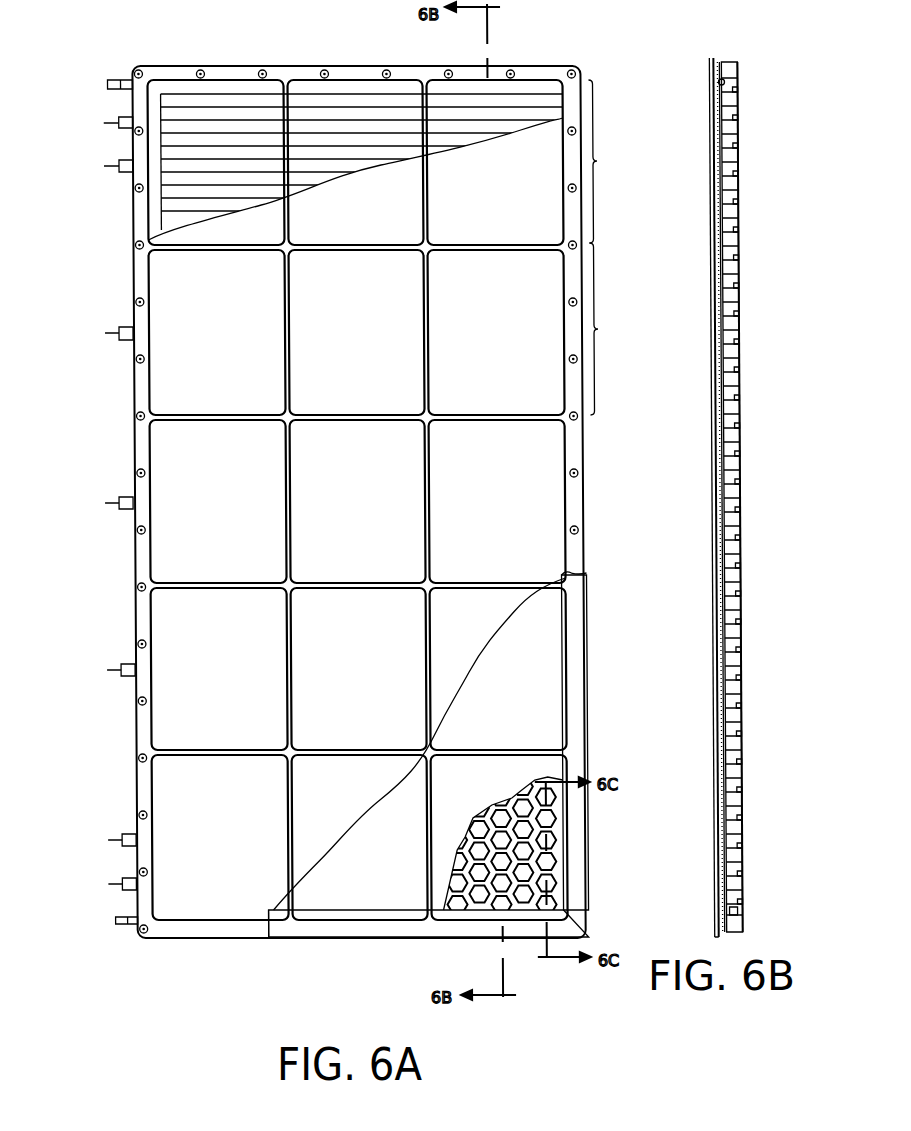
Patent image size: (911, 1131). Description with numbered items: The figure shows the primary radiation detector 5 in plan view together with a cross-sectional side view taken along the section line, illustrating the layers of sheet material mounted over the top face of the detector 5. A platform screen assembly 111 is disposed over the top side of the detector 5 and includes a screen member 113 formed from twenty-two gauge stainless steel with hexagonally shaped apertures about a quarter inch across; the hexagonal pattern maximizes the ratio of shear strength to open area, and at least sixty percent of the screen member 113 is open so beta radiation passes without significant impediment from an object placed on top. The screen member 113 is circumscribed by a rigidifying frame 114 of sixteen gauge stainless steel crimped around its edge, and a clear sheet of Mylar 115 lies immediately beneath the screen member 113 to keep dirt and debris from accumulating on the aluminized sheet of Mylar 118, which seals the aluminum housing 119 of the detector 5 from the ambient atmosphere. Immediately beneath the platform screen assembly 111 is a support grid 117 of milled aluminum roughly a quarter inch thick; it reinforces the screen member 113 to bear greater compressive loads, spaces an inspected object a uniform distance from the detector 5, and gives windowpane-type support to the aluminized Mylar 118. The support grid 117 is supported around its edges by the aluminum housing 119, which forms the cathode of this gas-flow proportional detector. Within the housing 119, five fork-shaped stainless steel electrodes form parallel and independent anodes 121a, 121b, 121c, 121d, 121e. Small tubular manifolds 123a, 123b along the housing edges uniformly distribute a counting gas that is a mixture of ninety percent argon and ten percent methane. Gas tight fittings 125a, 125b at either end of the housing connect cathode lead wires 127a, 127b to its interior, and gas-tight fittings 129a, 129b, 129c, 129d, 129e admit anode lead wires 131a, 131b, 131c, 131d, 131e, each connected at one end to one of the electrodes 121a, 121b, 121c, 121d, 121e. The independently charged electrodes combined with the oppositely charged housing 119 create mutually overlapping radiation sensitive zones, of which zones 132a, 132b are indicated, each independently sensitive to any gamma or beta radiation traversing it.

In FIG. 6A, the primary detector 5 is at (117, 44).
In FIG. 6A, the platform screen assembly 111 is at (265, 955).
In FIG. 6B, the platform screen assembly 111 is at (709, 793).
In FIG. 6A, the screen member 113 is at (468, 905).
In FIG. 6A, the rigidifying frame 114 is at (594, 738).
In FIG. 6A, the clear sheet of Mylar 115 is at (355, 890).
In FIG. 6A, the support grid 117 is at (429, 425).
In FIG. 6B, the support grid 117 is at (717, 715).
In FIG. 6A, the aluminized sheet of Mylar 118 is at (210, 360).
In FIG. 6A, the aluminum housing 119 is at (230, 68).
In FIG. 6B, the aluminum housing 119 is at (720, 65).
In FIG. 6A, the fork-shaped electrode 121a is at (387, 106).
In FIG. 6B, the fork-shaped electrode 121a is at (781, 169).
In FIG. 6B, the fork-shaped electrode 121b is at (781, 338).
In FIG. 6B, the fork-shaped electrode 121c is at (780, 528).
In FIG. 6B, the fork-shaped electrode 121d is at (779, 682).
In FIG. 6B, the fork-shaped electrode 121e is at (740, 793).
In FIG. 6A, the tubular manifold 123a is at (108, 78).
In FIG. 6B, the tubular manifold 123a is at (718, 82).
In FIG. 6A, the tubular manifold 123b is at (117, 925).
In FIG. 6B, the tubular manifold 123b is at (732, 912).
In FIG. 6A, the gas tight fitting 125a is at (118, 117).
In FIG. 6A, the gas tight fitting 125b is at (117, 890).
In FIG. 6A, the cathode lead wire 127a is at (118, 124).
In FIG. 6A, the cathode lead wire 127b is at (117, 882).
In FIG. 6A, the gas-tight fitting 129a is at (119, 174).
In FIG. 6A, the gas-tight fitting 129b is at (117, 340).
In FIG. 6A, the gas-tight fitting 129c is at (116, 509).
In FIG. 6A, the gas-tight fitting 129d is at (117, 677).
In FIG. 6A, the gas-tight fitting 129e is at (120, 834).
In FIG. 6A, the anode lead wire 131a is at (118, 166).
In FIG. 6A, the anode lead wire 131b is at (117, 333).
In FIG. 6A, the anode lead wire 131c is at (116, 502).
In FIG. 6A, the anode lead wire 131d is at (117, 669).
In FIG. 6A, the anode lead wire 131e is at (117, 838).
In FIG. 6A, the radiation sensitive zone 132a is at (616, 161).
In FIG. 6A, the radiation sensitive zone 132b is at (617, 329).